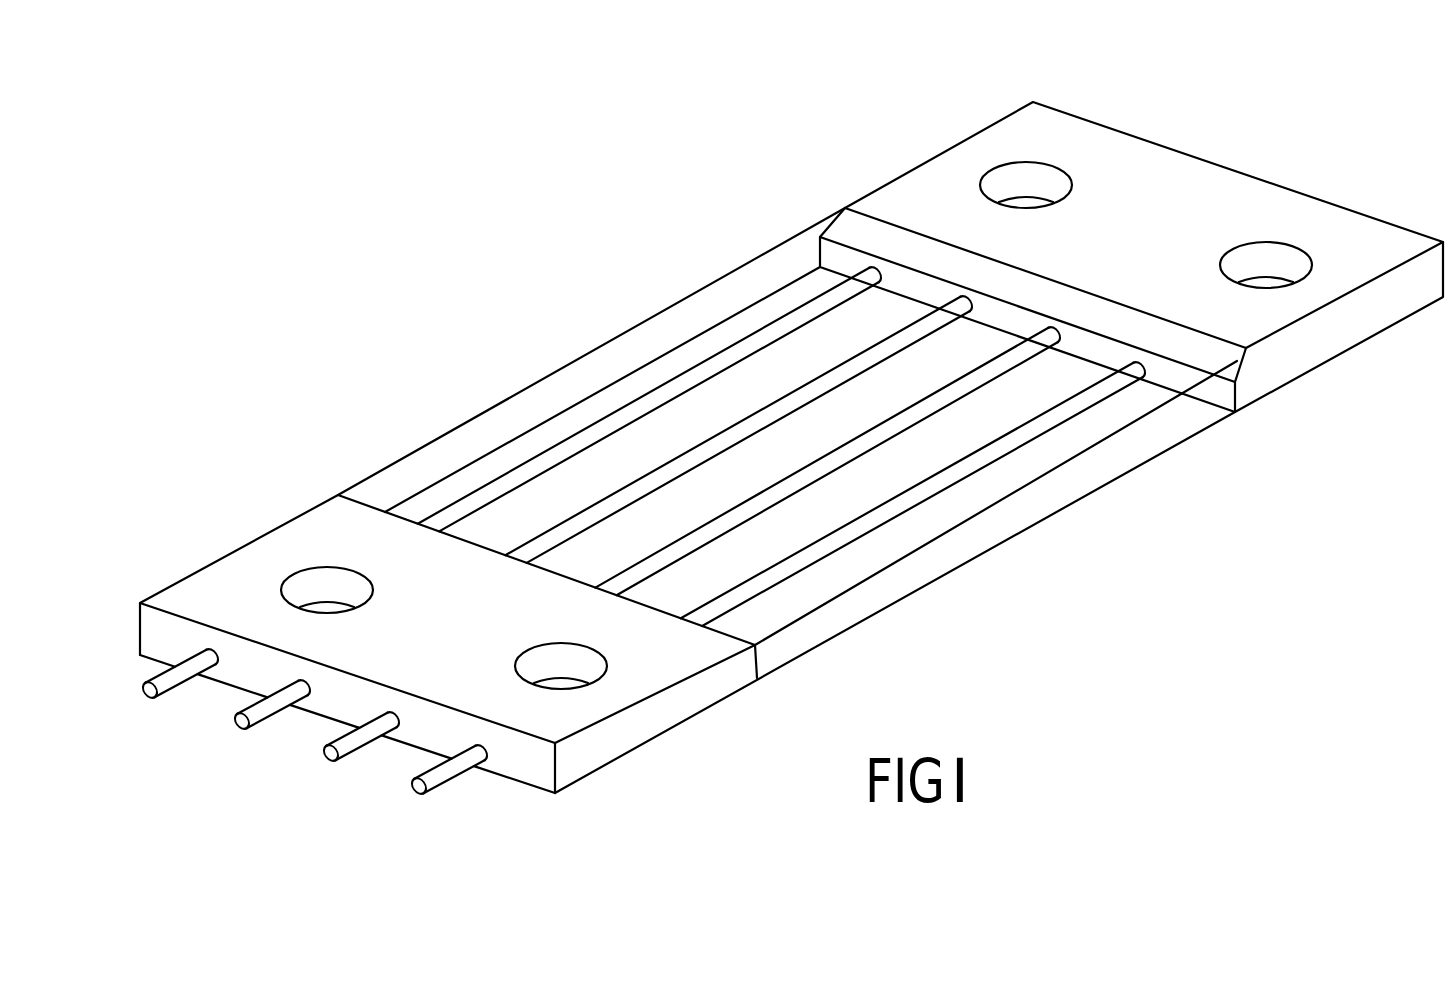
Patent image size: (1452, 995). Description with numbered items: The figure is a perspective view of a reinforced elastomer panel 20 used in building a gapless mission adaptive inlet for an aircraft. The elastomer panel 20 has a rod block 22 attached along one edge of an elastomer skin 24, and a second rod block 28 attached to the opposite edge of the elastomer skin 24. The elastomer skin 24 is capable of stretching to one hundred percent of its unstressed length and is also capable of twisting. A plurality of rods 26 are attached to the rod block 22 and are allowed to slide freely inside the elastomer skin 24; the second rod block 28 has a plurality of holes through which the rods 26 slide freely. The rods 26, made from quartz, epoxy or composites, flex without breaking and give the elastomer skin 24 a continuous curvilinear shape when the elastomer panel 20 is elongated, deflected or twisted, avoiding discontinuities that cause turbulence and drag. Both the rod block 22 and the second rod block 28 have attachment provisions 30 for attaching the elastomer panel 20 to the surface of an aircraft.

The elastomer panel 20 is at (688, 209).
The rod block 22 is at (1233, 187).
The elastomer skin 24 is at (1073, 510).
The rods 26 is at (640, 477).
The second rod block 28 is at (290, 520).
The attachment provisions 30 is at (1018, 180).